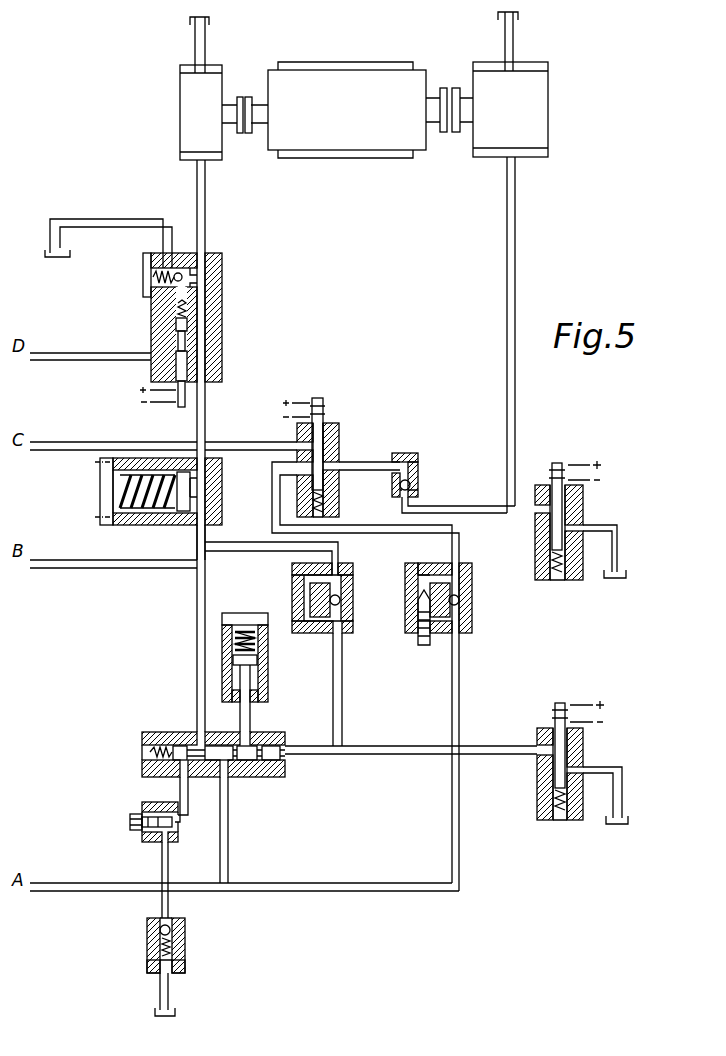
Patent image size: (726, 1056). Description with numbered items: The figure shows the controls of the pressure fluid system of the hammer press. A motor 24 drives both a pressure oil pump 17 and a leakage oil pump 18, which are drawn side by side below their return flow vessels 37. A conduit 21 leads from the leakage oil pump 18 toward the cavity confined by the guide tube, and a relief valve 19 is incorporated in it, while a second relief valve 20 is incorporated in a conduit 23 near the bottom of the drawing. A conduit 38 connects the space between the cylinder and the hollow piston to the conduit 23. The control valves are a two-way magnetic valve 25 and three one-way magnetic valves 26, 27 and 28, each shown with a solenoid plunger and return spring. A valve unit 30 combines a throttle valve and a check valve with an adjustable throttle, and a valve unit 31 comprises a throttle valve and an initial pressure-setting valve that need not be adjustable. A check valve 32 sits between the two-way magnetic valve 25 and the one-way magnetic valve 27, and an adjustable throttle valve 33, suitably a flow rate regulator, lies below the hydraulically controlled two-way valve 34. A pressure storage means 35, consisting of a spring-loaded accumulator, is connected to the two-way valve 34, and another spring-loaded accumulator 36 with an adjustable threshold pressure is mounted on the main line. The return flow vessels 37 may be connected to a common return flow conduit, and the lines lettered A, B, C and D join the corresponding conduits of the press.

The pressure oil pump 17 is at (535, 100).
The leakage oil pump 18 is at (187, 100).
The relief valve 19 is at (147, 268).
The relief valve 20 is at (187, 937).
The conduit 21 is at (203, 238).
The conduit 23 is at (202, 557).
The motor 24 is at (317, 93).
The two-way magnetic valve 25 is at (335, 425).
The one-way magnetic valve 26 is at (213, 340).
The one-way magnetic valve 27 is at (577, 518).
The one-way magnetic valve 28 is at (552, 819).
The valve unit 30 is at (468, 590).
The valve unit 31 is at (295, 605).
The check valve 32 is at (415, 453).
The adjustable throttle valve 33 is at (140, 805).
The hydraulically controlled two-way valve 34 is at (150, 740).
The pressure storage means 35 is at (268, 672).
The spring-loaded accumulator 36 is at (108, 482).
The return flow vessels 37 is at (210, 20).
The conduit 38 is at (155, 563).